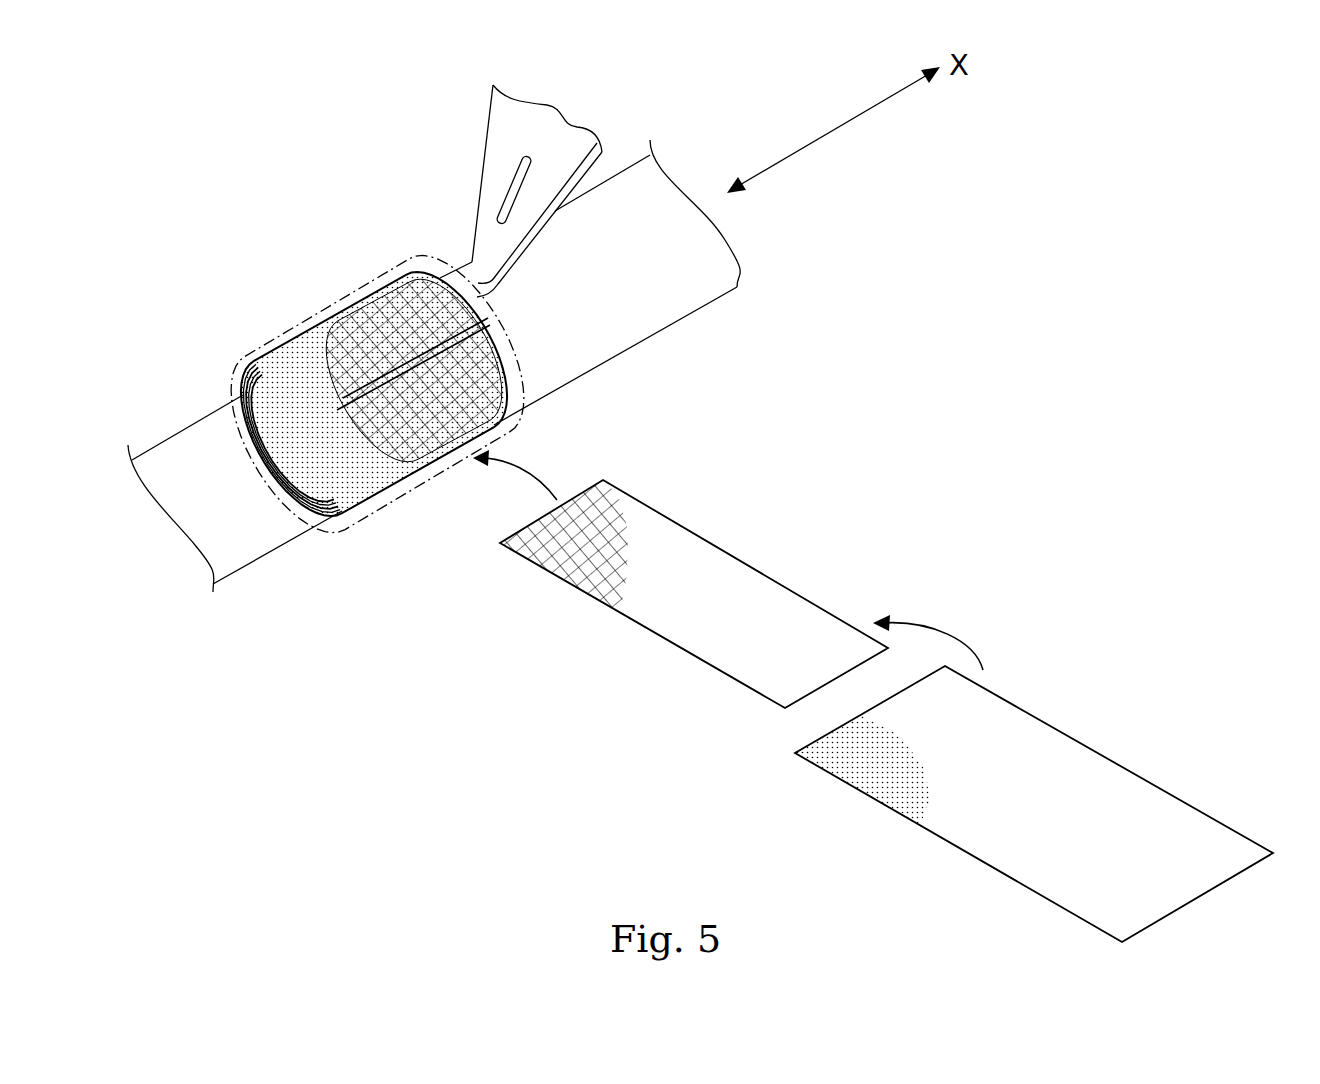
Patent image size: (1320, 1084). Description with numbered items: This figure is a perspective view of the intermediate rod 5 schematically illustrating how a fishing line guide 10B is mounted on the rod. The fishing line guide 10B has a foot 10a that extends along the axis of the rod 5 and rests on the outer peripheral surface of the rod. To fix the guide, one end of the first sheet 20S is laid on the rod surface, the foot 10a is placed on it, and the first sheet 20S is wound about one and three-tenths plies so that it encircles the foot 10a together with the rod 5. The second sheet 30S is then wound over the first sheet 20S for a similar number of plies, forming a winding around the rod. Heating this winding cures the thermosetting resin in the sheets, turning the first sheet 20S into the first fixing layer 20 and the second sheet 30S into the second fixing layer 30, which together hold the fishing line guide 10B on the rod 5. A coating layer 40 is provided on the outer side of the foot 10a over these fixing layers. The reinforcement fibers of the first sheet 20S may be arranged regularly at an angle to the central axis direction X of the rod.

The intermediate rod 5 is at (195, 450).
The fishing line guide 10B is at (568, 90).
The foot 10a is at (392, 290).
The first fixing layer 20 is at (440, 458).
The second fixing layer 30 is at (373, 490).
The coating layer 40 is at (523, 407).
The first sheet 20S is at (727, 588).
The second sheet 30S is at (1075, 768).